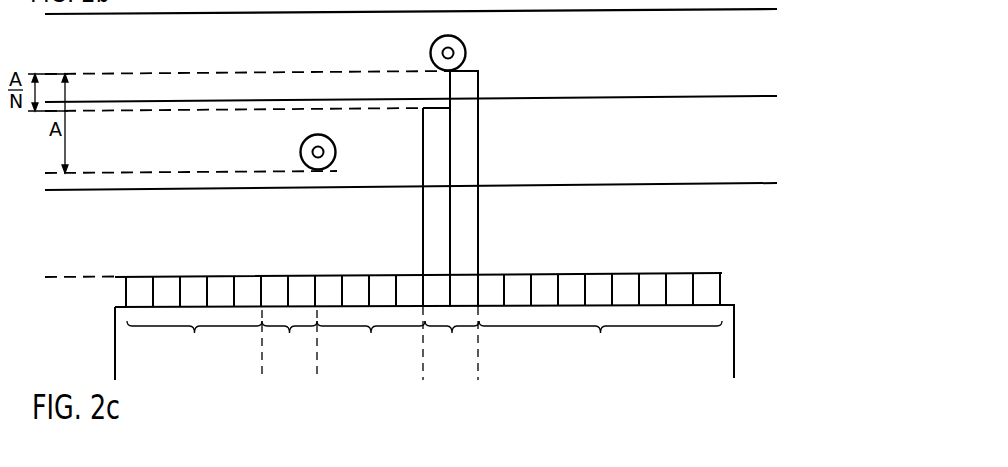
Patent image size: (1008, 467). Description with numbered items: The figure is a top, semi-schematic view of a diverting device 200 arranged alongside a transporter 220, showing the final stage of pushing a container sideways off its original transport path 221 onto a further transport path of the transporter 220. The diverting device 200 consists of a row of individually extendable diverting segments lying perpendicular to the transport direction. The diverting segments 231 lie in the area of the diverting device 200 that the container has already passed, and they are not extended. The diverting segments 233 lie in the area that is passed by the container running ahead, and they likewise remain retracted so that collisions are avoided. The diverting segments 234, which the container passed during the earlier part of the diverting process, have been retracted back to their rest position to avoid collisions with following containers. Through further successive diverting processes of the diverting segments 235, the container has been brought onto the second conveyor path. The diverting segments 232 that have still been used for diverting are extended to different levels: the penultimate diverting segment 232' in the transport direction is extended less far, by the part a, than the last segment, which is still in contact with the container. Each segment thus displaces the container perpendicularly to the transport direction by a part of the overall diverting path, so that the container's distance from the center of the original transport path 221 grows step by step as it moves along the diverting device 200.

The diverting device 200 is at (742, 334).
The transporter 220 is at (744, 56).
The original transport path 221 is at (620, 106).
The diverting segments 231 is at (194, 345).
The diverting segments 232 is at (452, 342).
The penultimate diverting segment 232' is at (408, 244).
The diverting segments 233 is at (600, 342).
The diverting segments 234 is at (289, 345).
The diverting segments 235 is at (371, 342).